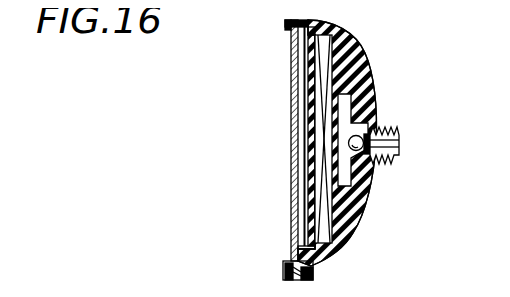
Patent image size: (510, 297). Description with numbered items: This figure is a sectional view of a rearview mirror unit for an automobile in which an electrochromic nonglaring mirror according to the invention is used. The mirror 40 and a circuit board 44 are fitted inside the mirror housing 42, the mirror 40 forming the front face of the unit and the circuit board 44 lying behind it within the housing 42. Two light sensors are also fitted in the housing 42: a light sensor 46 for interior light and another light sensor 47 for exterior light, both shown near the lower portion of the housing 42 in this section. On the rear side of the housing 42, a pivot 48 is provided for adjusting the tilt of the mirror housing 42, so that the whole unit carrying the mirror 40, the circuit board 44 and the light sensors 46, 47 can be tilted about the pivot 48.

The mirror 40 is at (287, 58).
The mirror housing 42 is at (361, 62).
The circuit board 44 is at (300, 90).
The light sensor for interior light 46 is at (282, 256).
The light sensor for exterior light 47 is at (303, 272).
The pivot 48 is at (357, 128).